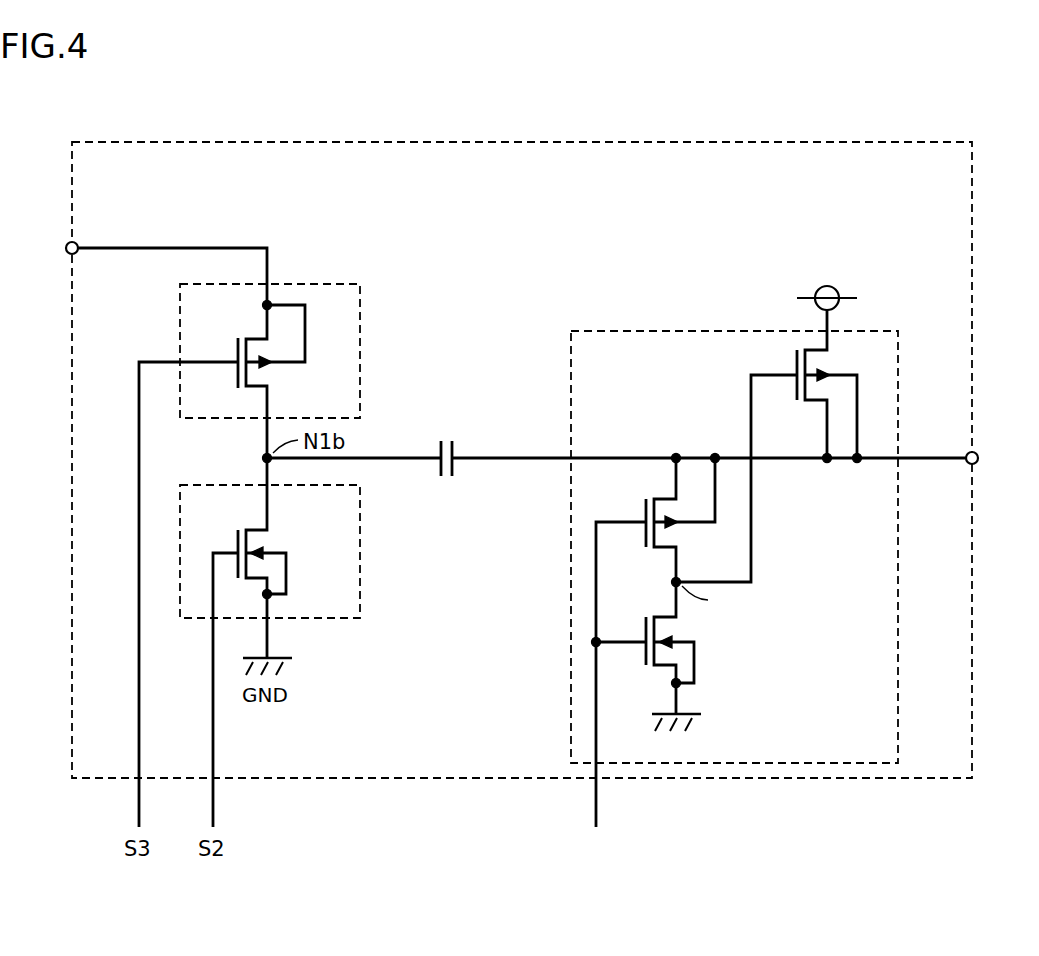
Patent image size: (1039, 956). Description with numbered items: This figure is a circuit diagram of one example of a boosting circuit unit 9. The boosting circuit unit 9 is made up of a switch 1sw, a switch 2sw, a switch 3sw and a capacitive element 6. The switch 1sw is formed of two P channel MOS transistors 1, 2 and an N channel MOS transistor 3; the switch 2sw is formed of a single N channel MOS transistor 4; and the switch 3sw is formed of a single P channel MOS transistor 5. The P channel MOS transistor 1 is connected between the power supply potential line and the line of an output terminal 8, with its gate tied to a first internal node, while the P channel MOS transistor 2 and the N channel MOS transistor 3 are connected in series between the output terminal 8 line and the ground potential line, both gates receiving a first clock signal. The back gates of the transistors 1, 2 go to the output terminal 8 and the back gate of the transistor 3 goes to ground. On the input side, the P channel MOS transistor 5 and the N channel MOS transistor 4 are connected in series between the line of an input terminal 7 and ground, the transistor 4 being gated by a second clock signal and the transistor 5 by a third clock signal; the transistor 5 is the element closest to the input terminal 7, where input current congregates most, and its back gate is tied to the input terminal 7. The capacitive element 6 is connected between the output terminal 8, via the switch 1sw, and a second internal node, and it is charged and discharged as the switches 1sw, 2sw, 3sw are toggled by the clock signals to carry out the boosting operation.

The P channel MOS transistor 1 is at (791, 370).
The P channel MOS transistor 2 is at (669, 495).
The N channel MOS transistor 3 is at (669, 615).
The N channel MOS transistor 4 is at (261, 528).
The P channel MOS transistor 5 is at (263, 338).
The capacitive element 6 is at (460, 470).
The input terminal 7 is at (67, 242).
The output terminal 8 is at (976, 452).
The boosting circuit unit 9 is at (890, 142).
The switch 1sw is at (609, 331).
The switch 2sw is at (360, 541).
The switch 3sw is at (360, 313).